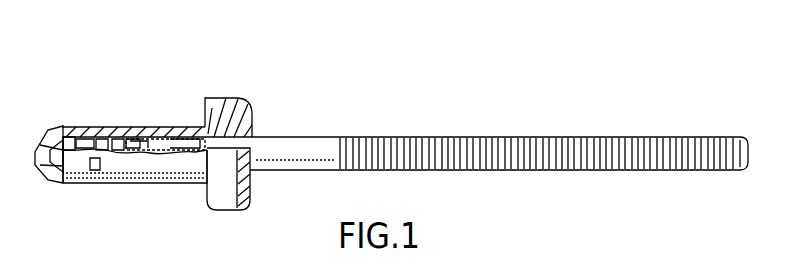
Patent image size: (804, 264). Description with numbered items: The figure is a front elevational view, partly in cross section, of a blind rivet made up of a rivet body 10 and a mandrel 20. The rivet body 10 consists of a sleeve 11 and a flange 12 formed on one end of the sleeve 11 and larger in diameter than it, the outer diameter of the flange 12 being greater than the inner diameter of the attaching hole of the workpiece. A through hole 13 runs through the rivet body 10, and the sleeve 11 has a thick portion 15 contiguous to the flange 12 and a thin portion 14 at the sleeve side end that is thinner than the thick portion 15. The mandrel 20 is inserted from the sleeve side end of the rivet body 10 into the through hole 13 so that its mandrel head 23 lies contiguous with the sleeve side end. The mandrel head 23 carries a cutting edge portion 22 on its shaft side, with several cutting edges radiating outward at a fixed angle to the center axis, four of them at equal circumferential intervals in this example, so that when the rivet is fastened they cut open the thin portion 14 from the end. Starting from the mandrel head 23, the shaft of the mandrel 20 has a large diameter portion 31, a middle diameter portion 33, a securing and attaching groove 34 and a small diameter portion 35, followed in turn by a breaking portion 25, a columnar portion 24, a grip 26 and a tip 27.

The rivet body 10 is at (224, 88).
The sleeve 11 is at (208, 63).
The flange 12 is at (241, 98).
The through hole 13 is at (126, 140).
The thin portion 14 is at (134, 143).
The thick portion 15 is at (186, 137).
The mandrel 20 is at (590, 105).
The cutting edge portion 22 is at (58, 128).
The mandrel head 23 is at (34, 168).
The columnar portion 24 is at (300, 146).
The breaking portion 25 is at (118, 143).
The grip 26 is at (522, 136).
The tip 27 is at (738, 138).
The large diameter portion 31 is at (68, 136).
The middle diameter portion 33 is at (83, 136).
The securing and attaching groove 34 is at (97, 150).
The small diameter portion 35 is at (100, 137).